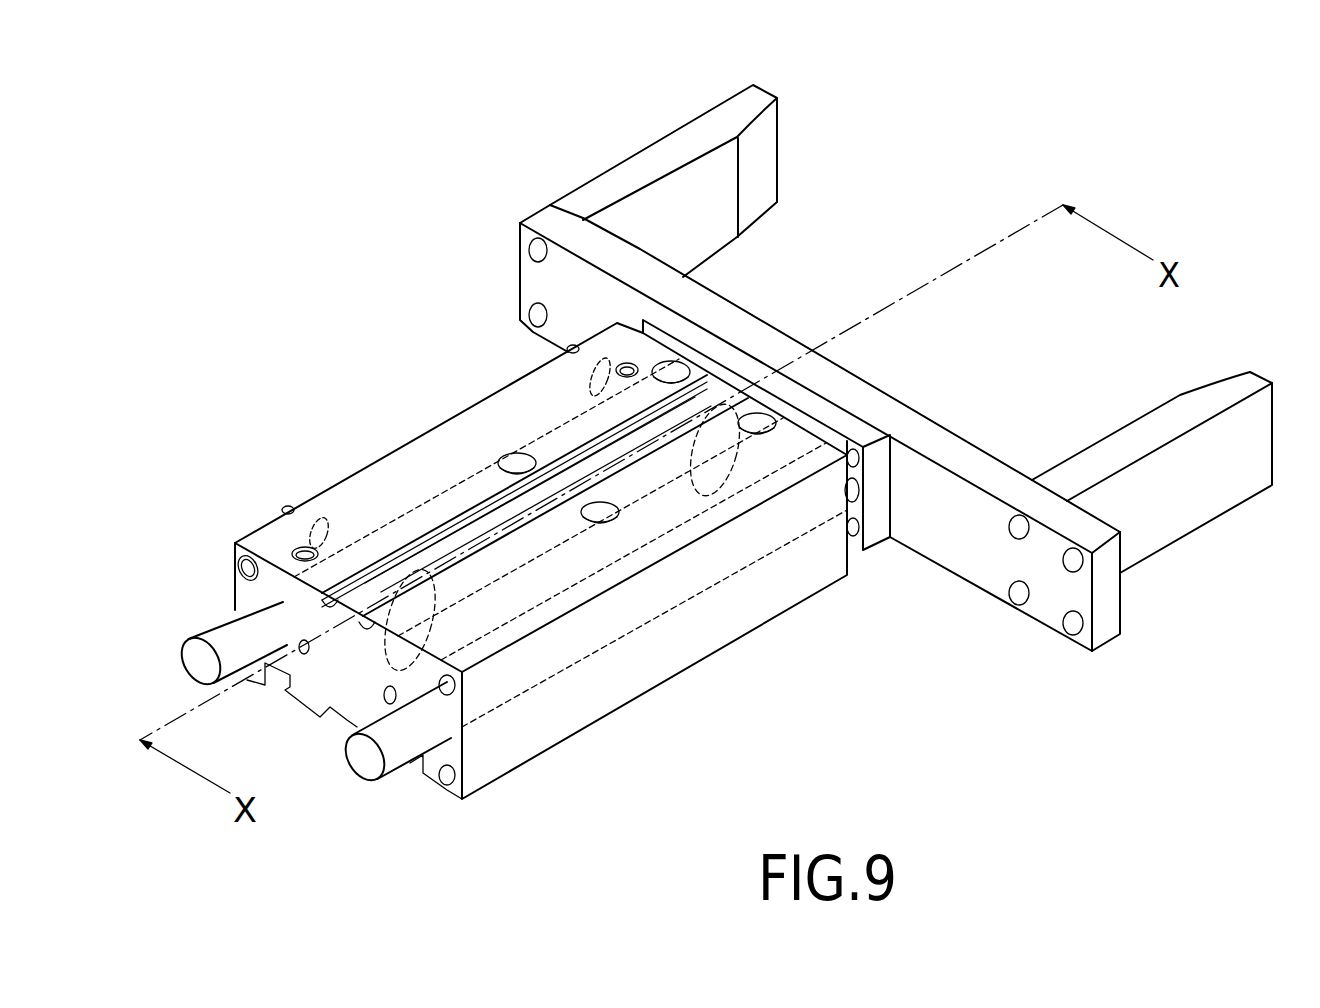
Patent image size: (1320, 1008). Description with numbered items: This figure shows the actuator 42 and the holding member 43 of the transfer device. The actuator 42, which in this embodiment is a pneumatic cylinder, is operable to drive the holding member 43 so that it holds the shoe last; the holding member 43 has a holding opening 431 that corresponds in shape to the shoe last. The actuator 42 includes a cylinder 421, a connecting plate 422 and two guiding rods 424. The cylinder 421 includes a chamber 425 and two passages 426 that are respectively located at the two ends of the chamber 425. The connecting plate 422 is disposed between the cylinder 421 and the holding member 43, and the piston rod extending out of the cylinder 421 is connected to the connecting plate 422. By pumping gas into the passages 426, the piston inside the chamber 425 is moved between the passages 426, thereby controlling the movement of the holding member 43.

The actuator 42 is at (698, 640).
The cylinder 421 is at (548, 559).
The connecting plate 422 is at (877, 535).
The guiding rods 424 is at (215, 637).
The chamber 425 is at (538, 590).
The passages 426 is at (583, 380).
The holding member 43 is at (660, 150).
The holding opening 431 is at (827, 247).